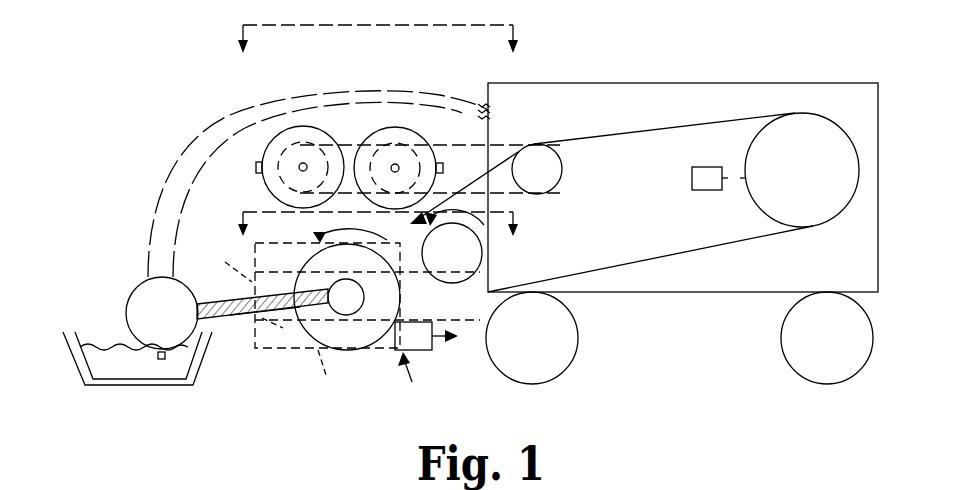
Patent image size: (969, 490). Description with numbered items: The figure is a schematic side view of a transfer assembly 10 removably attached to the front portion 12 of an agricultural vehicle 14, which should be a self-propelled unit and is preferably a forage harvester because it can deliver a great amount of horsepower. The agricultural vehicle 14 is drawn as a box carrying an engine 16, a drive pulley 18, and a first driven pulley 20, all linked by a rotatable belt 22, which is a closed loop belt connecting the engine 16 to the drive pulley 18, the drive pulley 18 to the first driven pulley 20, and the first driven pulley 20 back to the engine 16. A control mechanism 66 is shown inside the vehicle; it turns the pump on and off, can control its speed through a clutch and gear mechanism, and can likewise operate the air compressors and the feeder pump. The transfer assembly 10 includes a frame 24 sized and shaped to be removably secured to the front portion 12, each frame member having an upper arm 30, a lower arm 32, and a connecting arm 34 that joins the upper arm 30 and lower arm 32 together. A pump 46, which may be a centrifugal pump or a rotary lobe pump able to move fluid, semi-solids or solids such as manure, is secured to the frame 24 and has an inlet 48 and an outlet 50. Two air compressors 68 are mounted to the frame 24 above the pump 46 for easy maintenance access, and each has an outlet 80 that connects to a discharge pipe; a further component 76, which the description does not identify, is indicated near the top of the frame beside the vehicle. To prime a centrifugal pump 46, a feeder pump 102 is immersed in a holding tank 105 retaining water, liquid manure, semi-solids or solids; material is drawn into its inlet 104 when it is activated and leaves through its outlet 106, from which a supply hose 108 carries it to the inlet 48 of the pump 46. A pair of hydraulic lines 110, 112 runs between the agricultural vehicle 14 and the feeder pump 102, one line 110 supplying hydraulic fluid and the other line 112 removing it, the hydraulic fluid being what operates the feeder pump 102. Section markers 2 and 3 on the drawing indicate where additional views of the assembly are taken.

The section line 2- 2 is at (378, 52).
The section line 3- 3 is at (378, 238).
The transfer assembly 10 is at (198, 109).
The front portion 12 is at (488, 296).
The agricultural vehicle 14 is at (770, 83).
The engine 16 is at (822, 118).
The drive pulley 18 is at (562, 168).
The first driven pulley 20 is at (428, 283).
The rotatable belt 22 is at (692, 255).
The frame 24 is at (412, 383).
The upper arm 30 is at (270, 243).
The lower arm 32 is at (328, 378).
The connecting arm 34 is at (342, 294).
The pump 46 is at (358, 336).
The inlet 48 is at (329, 313).
The outlet 50 is at (433, 349).
The control mechanism 66 is at (708, 167).
The air compressor 68 is at (323, 129).
The guide plate 76 is at (473, 142).
The outlet 80 is at (256, 169).
The feeder pump 102 is at (128, 305).
The inlet 104 is at (152, 354).
The holding tank 105 is at (195, 379).
The outlet 106 is at (200, 304).
The supply hose 108 is at (242, 318).
The hydraulic line 110 is at (172, 165).
The hydraulic line 112 is at (188, 188).